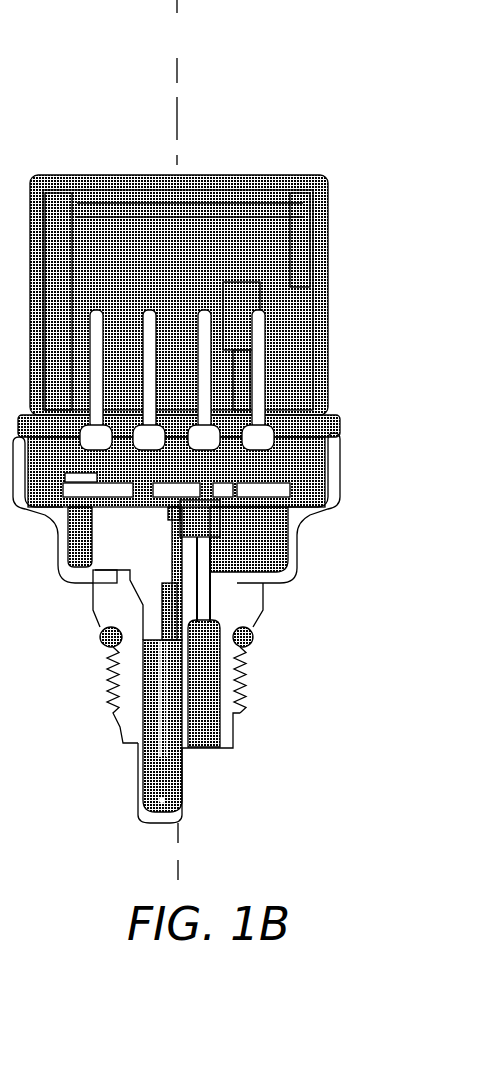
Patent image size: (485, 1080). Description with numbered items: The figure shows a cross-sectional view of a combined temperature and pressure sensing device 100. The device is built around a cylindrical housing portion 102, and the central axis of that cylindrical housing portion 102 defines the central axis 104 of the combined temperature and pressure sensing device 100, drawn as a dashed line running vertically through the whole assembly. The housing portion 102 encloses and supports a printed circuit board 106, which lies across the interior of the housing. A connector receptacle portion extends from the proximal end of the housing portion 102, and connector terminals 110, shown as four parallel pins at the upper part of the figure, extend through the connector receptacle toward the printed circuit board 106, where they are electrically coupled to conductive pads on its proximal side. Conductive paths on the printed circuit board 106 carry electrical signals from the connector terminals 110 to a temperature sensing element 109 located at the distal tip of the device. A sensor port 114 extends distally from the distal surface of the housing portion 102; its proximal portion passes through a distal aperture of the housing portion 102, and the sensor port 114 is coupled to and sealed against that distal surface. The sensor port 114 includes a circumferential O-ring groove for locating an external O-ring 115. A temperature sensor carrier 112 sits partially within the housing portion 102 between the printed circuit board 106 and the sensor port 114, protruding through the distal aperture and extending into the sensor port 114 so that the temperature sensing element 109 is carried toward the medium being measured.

The combined temperature and pressure sensing device 100 is at (342, 133).
The central axis 104 is at (188, 72).
The connector terminals 110 is at (255, 438).
The printed circuit board 106 is at (313, 511).
The cylindrical housing portion 102 is at (303, 549).
The temperature sensor carrier 112 is at (107, 543).
The external O-ring 115 is at (100, 647).
The sensor port 114 is at (250, 680).
The temperature sensing element 109 is at (180, 773).